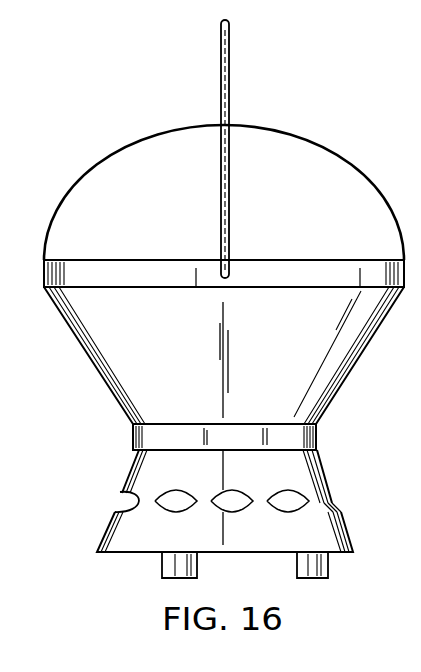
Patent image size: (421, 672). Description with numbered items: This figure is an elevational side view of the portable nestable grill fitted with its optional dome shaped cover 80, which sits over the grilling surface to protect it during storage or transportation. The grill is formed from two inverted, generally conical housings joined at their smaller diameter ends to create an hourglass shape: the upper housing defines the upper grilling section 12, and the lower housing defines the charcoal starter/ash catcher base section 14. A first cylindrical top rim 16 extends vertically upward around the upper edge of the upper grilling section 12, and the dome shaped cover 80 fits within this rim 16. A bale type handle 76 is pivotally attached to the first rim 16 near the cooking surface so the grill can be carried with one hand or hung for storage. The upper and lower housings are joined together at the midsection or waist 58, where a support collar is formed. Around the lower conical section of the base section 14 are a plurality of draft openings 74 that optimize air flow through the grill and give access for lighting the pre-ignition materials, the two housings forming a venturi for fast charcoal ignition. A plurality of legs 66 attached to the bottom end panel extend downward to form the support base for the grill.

The upper grilling section 12 is at (361, 371).
The charcoal starter/ash catcher base section 14 is at (336, 464).
The first cylindrical top rim 16 is at (83, 273).
The waist 58 is at (318, 438).
The legs 66 is at (328, 564).
The draft openings 74 is at (122, 502).
The bale type handle 76 is at (229, 83).
The dome shaped cover 80 is at (289, 170).